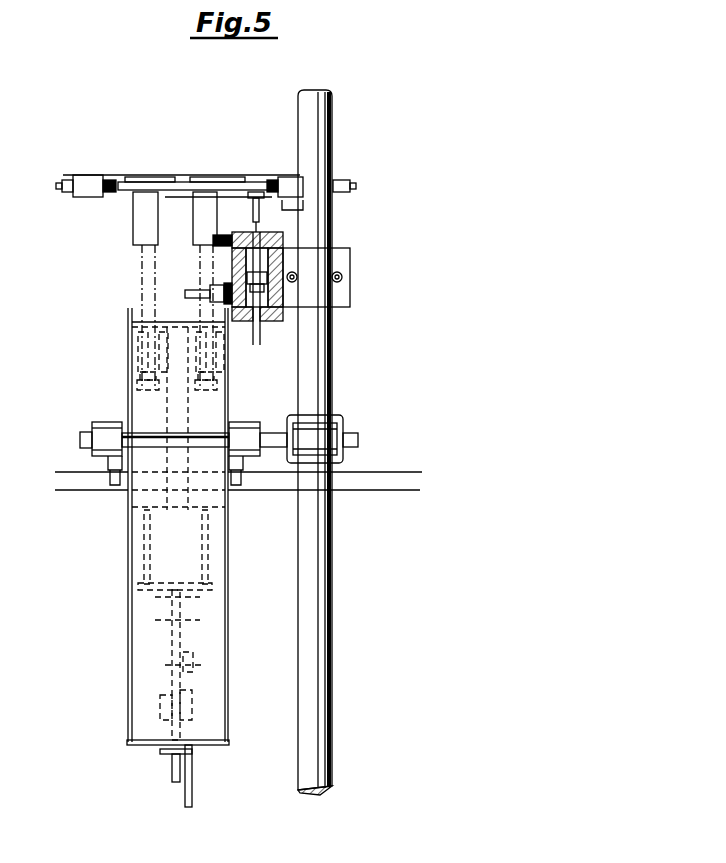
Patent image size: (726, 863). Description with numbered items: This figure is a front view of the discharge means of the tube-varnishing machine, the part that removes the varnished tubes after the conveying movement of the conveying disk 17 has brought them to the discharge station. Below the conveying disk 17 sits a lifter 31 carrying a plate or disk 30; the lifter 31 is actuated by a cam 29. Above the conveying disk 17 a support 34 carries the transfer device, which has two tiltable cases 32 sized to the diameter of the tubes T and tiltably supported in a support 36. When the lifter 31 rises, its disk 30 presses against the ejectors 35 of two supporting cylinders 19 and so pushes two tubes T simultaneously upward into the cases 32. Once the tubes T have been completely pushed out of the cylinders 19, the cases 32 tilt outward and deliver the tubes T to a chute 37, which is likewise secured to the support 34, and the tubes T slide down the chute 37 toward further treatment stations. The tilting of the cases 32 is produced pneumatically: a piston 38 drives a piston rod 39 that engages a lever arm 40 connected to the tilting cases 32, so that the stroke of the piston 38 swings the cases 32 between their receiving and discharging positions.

The conveying disk 17 is at (365, 480).
The supporting cylinders 19 is at (190, 411).
The cam 29 is at (185, 783).
The plate or disk 30 is at (150, 589).
The lifter 31 is at (175, 628).
The tiltable cases 32 is at (137, 213).
The support 34 is at (325, 153).
The ejectors 35 is at (200, 548).
The support 36 is at (85, 180).
The chute 37 is at (130, 508).
The piston 38 is at (268, 280).
The piston rod 39 is at (258, 224).
The lever arm 40 is at (255, 192).
The tubes T is at (196, 271).